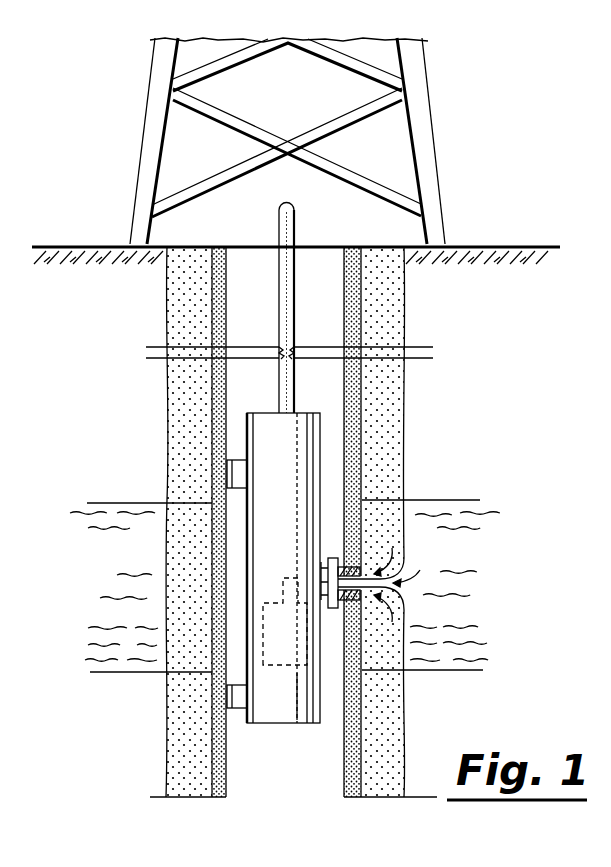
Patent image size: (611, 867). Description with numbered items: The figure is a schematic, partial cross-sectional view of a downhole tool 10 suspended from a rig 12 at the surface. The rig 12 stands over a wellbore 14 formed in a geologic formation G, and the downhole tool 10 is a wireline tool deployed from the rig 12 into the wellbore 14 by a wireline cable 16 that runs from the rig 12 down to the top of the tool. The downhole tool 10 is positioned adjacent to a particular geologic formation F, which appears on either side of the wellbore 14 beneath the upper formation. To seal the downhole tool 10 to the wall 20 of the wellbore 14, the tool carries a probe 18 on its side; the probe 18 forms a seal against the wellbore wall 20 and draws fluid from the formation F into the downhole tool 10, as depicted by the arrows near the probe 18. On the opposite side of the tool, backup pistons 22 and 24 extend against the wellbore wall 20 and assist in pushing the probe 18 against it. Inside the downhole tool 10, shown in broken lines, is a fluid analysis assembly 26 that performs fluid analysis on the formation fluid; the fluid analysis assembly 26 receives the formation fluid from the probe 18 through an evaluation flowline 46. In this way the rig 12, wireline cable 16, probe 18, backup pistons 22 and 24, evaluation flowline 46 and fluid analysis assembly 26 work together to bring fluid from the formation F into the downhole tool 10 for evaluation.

The downhole tool 10 is at (322, 498).
The rig 12 is at (433, 142).
The wellbore 14 is at (347, 270).
The wireline cable 16 is at (294, 218).
The probe 18 is at (342, 562).
The wellbore wall 20 is at (362, 647).
The backup piston 22 is at (243, 460).
The backup piston 24 is at (238, 710).
The fluid analysis assembly 26 is at (288, 672).
The evaluation flowline 46 is at (288, 578).
The geologic formation F is at (97, 650).
The geologic formation G is at (489, 411).